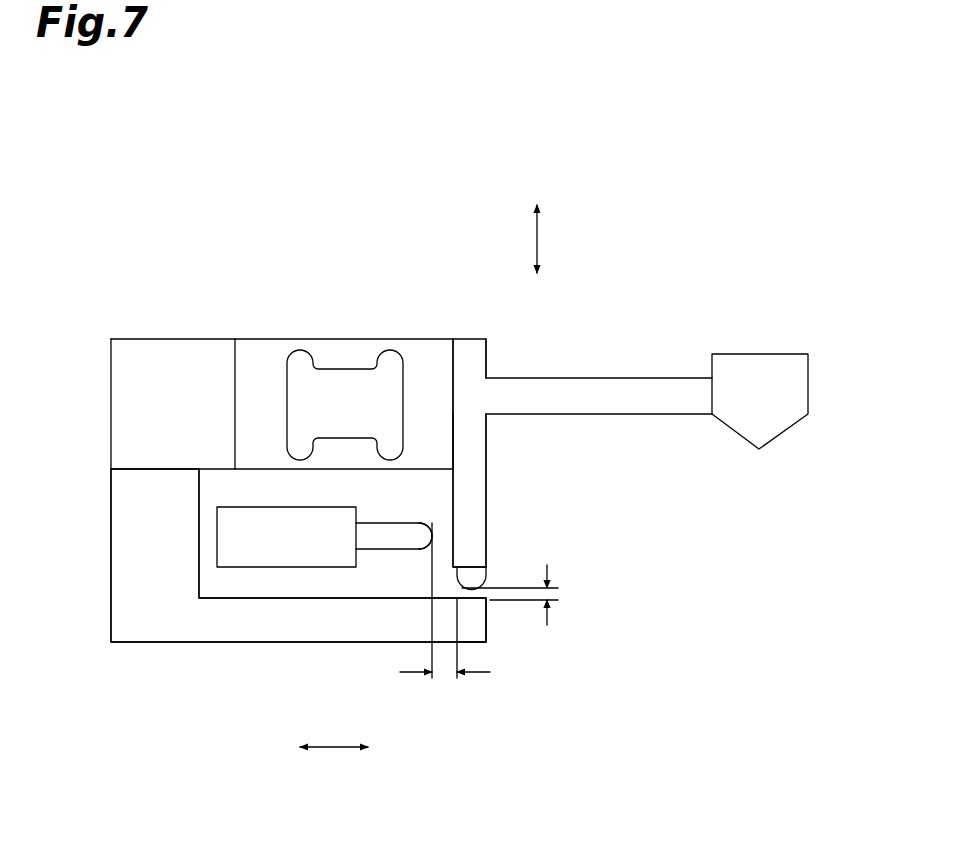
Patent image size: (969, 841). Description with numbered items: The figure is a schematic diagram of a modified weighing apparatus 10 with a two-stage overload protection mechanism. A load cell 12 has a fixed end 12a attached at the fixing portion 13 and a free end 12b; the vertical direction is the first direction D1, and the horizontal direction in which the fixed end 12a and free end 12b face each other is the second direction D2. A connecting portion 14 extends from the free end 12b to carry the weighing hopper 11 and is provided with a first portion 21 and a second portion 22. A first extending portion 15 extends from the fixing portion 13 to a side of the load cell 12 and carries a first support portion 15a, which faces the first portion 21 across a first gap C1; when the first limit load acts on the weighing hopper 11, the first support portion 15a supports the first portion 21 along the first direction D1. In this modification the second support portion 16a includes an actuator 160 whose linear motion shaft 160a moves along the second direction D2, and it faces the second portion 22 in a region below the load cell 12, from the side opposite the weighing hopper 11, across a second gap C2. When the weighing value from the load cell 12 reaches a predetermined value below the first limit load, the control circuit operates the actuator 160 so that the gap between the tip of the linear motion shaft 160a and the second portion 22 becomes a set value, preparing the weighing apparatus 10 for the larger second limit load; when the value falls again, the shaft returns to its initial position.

The weighing apparatus 10 is at (661, 206).
The weighing hopper 11 is at (808, 390).
The load cell 12 is at (347, 339).
The fixed end 12a is at (235, 408).
The free end 12b is at (453, 400).
The fixing portion 13 is at (111, 405).
The connecting portion 14 is at (603, 378).
The first extending portion 15 is at (229, 642).
The first support portion 15a is at (478, 622).
The second support portion 16a is at (430, 532).
The actuator 160 is at (283, 567).
The linear motion shaft 160a is at (390, 549).
The first portion 21 is at (478, 580).
The second portion 22 is at (474, 540).
The first gap C1 is at (524, 595).
The second gap C2 is at (445, 617).
The first direction D1 is at (540, 238).
The second direction D2 is at (333, 748).